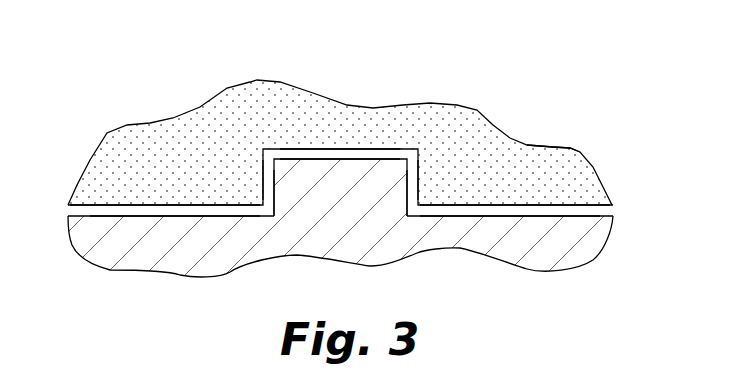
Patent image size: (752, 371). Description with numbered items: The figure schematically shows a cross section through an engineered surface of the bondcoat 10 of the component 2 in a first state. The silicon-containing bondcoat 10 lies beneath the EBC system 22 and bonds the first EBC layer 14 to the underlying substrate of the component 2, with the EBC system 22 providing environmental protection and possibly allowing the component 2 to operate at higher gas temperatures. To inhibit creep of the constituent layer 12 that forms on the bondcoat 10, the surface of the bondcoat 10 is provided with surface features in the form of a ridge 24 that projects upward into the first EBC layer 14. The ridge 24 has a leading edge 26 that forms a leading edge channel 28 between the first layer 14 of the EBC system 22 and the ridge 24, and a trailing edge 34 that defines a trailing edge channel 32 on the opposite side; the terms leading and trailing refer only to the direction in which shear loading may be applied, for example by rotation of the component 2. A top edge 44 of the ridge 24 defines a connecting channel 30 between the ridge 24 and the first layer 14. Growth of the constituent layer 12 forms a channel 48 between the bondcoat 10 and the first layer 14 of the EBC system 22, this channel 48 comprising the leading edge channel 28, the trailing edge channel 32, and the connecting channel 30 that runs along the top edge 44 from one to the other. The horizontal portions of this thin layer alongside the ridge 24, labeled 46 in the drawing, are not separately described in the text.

The component 2 is at (88, 60).
The bondcoat 10 is at (353, 247).
The constituent layer 12 is at (607, 212).
The first EBC layer 14 is at (573, 162).
The EBC system 22 is at (487, 164).
The ridge 24 is at (380, 175).
The leading edge 26 is at (275, 183).
The leading edge channel 28 is at (264, 176).
The connecting channel 30 is at (327, 152).
The trailing edge channel 32 is at (413, 182).
The trailing edge 34 is at (403, 208).
The top edge 44 is at (330, 157).
The bottom portion of liner 46 is at (98, 218).
The channel 48 is at (83, 210).